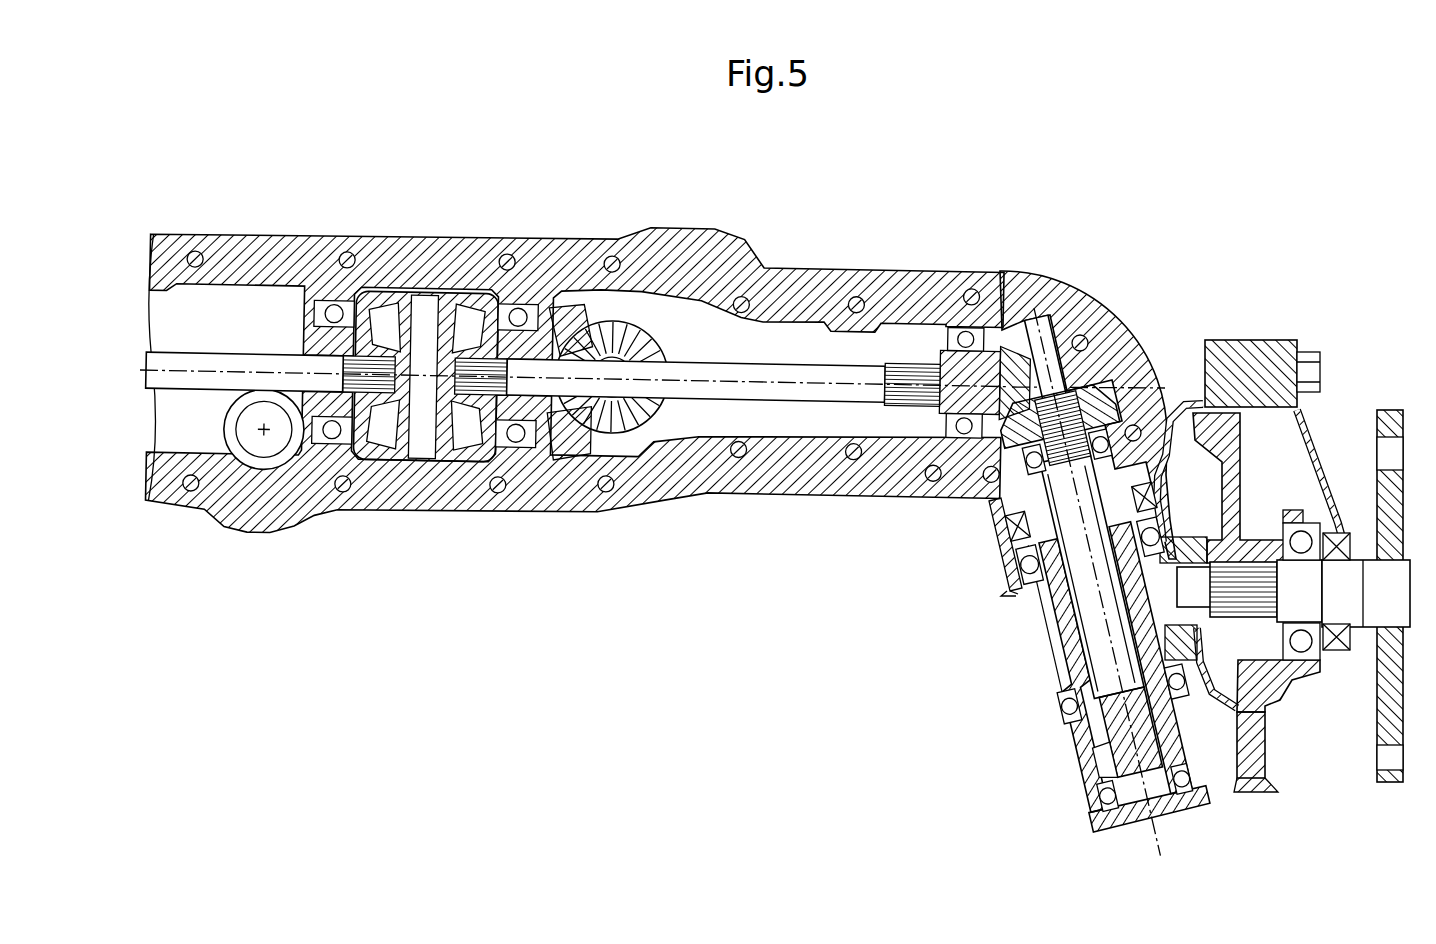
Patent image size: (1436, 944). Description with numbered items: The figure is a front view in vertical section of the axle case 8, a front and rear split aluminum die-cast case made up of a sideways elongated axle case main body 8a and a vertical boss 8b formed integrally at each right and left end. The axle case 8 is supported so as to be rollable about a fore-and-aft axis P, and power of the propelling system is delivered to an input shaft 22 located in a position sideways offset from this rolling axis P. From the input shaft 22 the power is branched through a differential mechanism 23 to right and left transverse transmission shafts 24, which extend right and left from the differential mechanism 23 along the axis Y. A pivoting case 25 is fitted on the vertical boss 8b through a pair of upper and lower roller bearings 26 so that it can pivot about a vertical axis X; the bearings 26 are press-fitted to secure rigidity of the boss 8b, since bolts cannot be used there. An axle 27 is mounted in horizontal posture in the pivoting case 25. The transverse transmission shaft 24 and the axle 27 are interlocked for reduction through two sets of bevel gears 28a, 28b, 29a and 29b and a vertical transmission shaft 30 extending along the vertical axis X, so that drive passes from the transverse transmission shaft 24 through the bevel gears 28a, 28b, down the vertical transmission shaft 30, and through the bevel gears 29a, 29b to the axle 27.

The axle case 8 is at (266, 231).
The axle case main body 8a is at (584, 508).
The vertical boss 8b is at (1056, 611).
The input shaft 22 is at (555, 345).
The differential mechanism 23 is at (384, 465).
The transverse transmission shaft 24 is at (264, 350).
The pivoting case 25 is at (1317, 452).
The roller bearing 26 is at (1012, 562).
The axle 27 is at (1357, 626).
The bevel gear 28a is at (1003, 338).
The bevel gear 28b is at (1101, 392).
The bevel gear 29a is at (1096, 758).
The bevel gear 29b is at (1213, 721).
The vertical transmission shaft 30 is at (1093, 627).
The fore-and-aft axis P is at (262, 425).
The vertical axis X is at (1030, 320).
The axis of the transverse transmission shafts Y is at (822, 384).